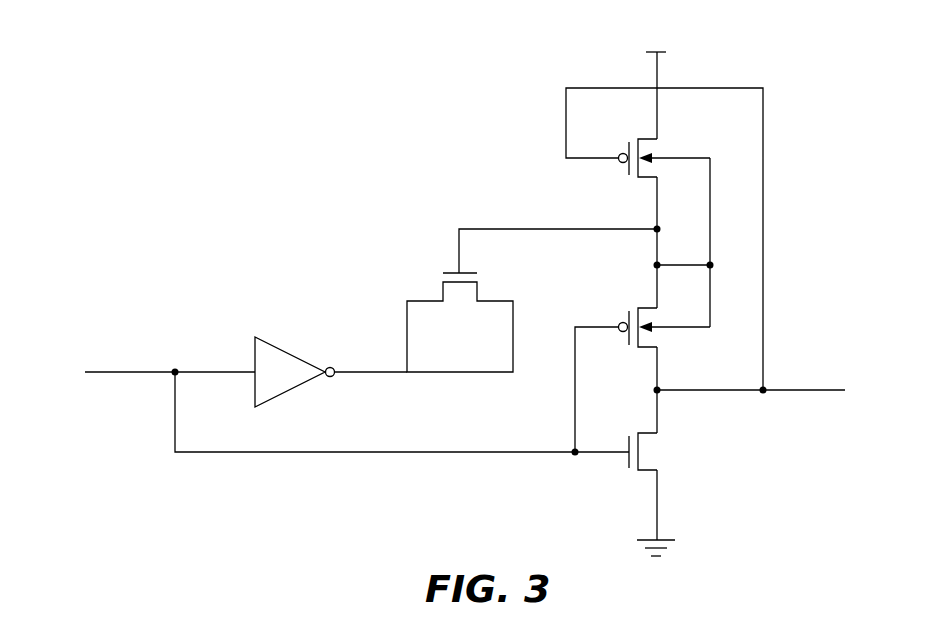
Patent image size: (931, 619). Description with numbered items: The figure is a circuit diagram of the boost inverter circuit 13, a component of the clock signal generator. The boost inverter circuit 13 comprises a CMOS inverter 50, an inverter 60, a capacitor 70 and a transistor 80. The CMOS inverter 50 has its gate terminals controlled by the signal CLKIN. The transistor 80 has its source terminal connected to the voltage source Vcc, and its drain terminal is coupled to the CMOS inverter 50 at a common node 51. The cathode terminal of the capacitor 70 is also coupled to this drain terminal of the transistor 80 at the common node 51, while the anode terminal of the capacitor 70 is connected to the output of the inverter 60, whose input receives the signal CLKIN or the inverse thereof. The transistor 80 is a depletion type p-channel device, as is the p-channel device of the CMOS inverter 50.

The boost inverter circuit 13 is at (320, 135).
The CMOS inverter 50 is at (700, 433).
The common node 51 is at (657, 203).
The inverter 60 is at (284, 345).
The capacitor 70 is at (441, 278).
The transistor 80 is at (634, 137).